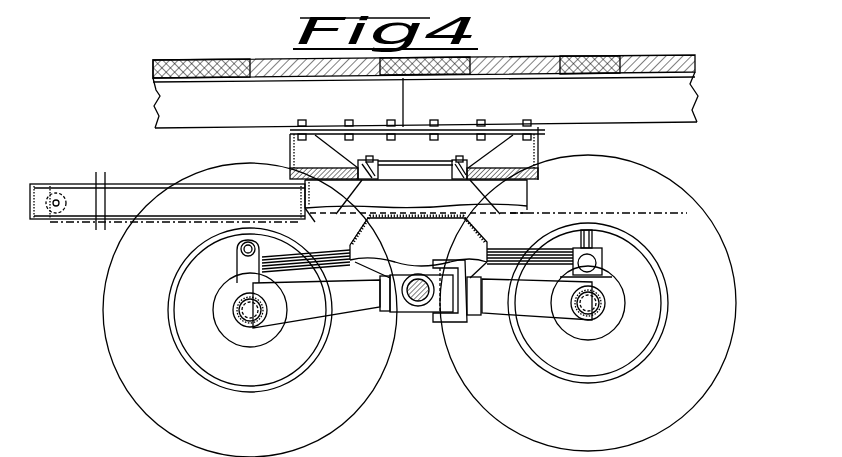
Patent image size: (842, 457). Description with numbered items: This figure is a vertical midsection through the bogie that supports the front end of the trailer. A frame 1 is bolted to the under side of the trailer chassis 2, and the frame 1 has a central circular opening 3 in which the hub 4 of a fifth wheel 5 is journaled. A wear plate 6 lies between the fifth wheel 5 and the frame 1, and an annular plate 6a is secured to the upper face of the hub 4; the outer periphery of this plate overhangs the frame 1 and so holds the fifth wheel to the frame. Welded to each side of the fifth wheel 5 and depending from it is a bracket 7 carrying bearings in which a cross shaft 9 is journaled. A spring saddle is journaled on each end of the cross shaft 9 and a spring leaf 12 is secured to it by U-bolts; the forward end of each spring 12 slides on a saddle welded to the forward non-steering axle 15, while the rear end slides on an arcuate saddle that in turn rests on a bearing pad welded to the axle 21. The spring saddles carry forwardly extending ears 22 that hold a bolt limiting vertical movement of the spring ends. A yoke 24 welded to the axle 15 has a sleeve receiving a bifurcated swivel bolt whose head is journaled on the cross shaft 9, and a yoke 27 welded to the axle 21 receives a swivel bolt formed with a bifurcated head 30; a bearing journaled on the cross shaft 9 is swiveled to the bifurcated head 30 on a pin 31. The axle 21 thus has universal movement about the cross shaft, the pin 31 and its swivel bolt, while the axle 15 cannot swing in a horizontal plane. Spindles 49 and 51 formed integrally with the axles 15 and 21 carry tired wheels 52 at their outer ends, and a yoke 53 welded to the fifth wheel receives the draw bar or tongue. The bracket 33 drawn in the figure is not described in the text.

The frame 1 is at (543, 138).
The trailer chassis 2 is at (657, 108).
The central circular opening 3 is at (452, 176).
The hub 4 is at (452, 170).
The fifth wheel 5 is at (378, 174).
The wear plate 6 is at (492, 167).
The annular plate 6a is at (390, 164).
The bracket 7 is at (406, 243).
The cross shaft 9 is at (418, 302).
The spring leaf 12 is at (300, 272).
The forward non-steering axle 15 is at (240, 318).
The axle 21 is at (610, 318).
The forwardly extending ears 22 is at (245, 276).
The yoke 24 is at (357, 316).
The yoke 27 is at (536, 314).
The bifurcated head 30 is at (470, 324).
The pin 31 is at (450, 262).
The spring bracket 33 is at (603, 262).
The spindle 49 is at (240, 311).
The spindle 51 is at (600, 306).
The tired wheels 52 is at (162, 424).
The yoke 53 is at (56, 222).